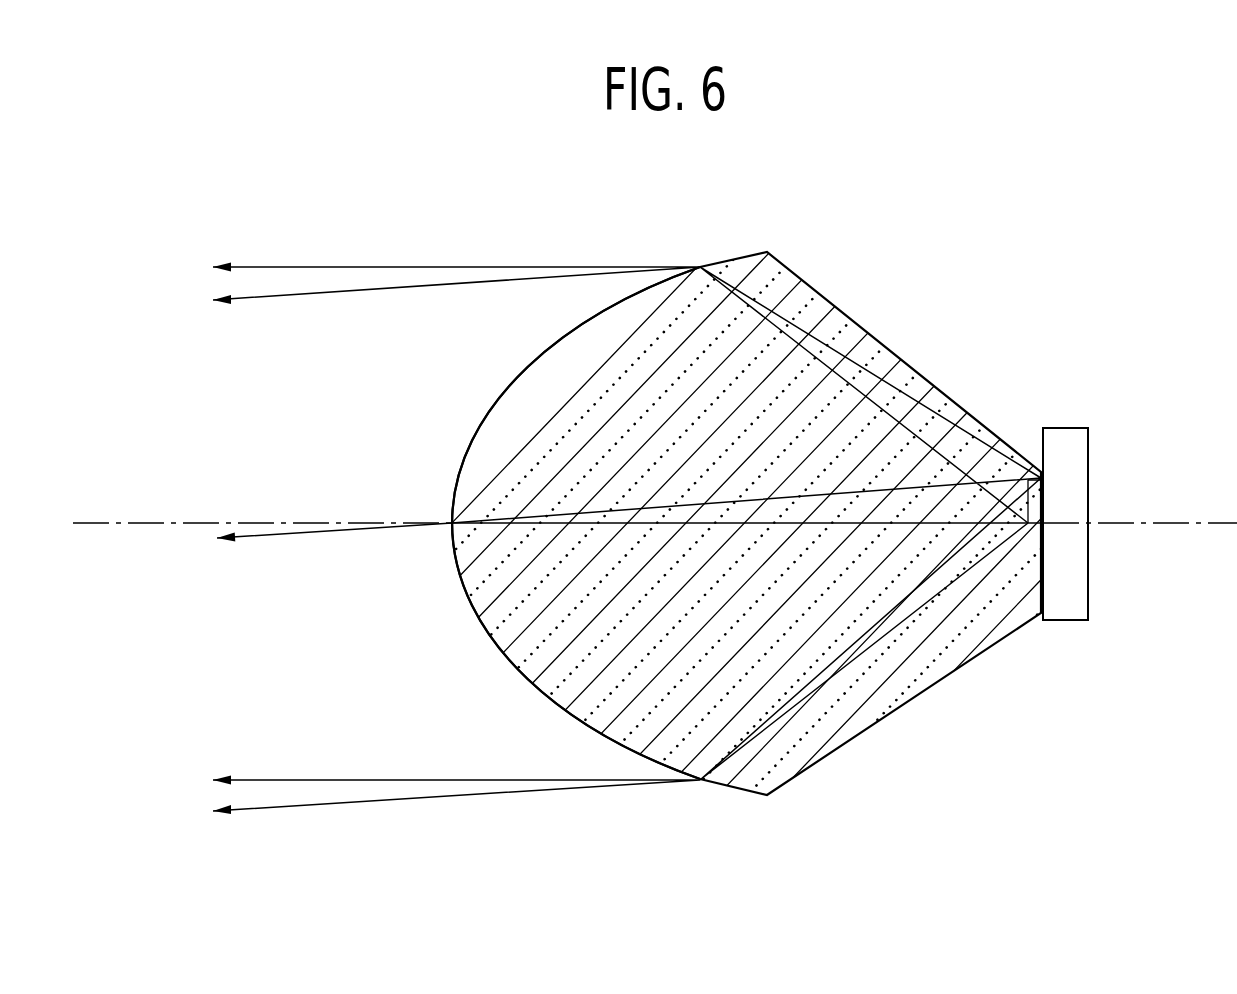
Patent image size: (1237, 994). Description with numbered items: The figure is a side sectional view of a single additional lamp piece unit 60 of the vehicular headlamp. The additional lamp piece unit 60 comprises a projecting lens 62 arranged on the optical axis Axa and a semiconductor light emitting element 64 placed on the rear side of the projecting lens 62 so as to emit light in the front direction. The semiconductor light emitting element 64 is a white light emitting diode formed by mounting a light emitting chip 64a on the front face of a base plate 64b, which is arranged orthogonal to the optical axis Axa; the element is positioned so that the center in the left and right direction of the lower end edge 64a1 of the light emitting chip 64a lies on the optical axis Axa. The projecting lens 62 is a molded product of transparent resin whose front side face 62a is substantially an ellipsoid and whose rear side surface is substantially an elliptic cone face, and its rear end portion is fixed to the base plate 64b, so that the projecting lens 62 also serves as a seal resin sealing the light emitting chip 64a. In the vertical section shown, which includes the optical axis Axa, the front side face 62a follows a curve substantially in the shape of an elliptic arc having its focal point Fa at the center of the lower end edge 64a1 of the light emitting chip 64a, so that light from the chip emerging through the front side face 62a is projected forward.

The additional lamp piece unit 60 is at (707, 490).
The projecting lens 62 is at (707, 490).
The front side face 62a is at (522, 368).
The semiconductor light emitting element 64 is at (1083, 461).
The light emitting chip 64a is at (1038, 478).
The lower end edge 64a1 is at (1046, 543).
The base plate 64b is at (1067, 487).
The focal point Fa is at (1028, 525).
The optical axis Axa is at (162, 522).